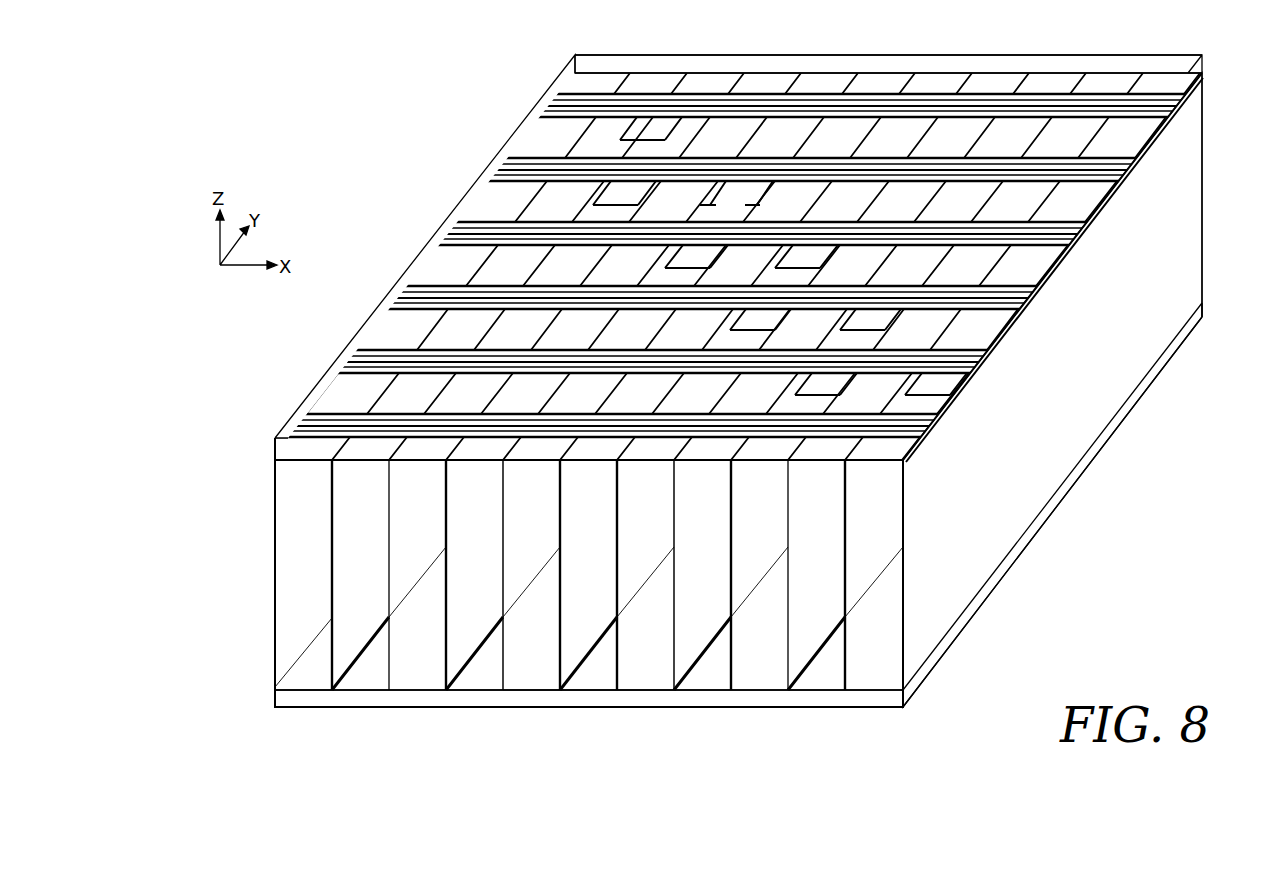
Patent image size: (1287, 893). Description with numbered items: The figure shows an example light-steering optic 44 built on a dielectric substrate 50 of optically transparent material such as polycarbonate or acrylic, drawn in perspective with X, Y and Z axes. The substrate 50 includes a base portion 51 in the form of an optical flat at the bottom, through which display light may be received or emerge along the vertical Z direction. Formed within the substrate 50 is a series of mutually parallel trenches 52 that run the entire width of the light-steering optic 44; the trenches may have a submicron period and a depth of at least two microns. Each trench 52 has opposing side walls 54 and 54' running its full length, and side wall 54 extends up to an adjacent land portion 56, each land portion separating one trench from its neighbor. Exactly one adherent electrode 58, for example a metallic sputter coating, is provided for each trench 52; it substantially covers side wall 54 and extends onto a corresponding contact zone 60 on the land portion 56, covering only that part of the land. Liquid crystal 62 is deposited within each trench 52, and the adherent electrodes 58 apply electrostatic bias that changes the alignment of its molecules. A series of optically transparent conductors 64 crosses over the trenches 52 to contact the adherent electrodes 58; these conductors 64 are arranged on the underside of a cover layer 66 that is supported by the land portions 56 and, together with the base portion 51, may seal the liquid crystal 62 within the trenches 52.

The light-steering optic 44 is at (1250, 540).
The dielectric substrate 50 is at (235, 548).
The base portion 51 is at (1203, 315).
The trenches 52 is at (608, 685).
The side wall 54 is at (531, 575).
The side wall 54' is at (645, 575).
The land portion 56 is at (596, 403).
The adherent electrode 58 is at (601, 530).
The contact zone 60 is at (742, 213).
The liquid crystal 62 is at (605, 652).
The optically transparent conductors 64 is at (496, 218).
The cover layer 66 is at (1203, 60).